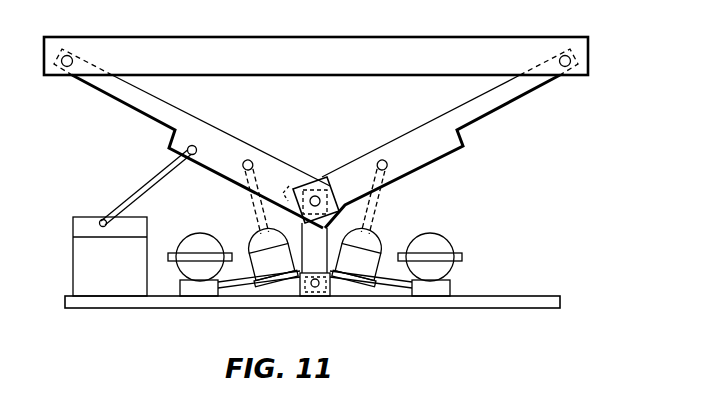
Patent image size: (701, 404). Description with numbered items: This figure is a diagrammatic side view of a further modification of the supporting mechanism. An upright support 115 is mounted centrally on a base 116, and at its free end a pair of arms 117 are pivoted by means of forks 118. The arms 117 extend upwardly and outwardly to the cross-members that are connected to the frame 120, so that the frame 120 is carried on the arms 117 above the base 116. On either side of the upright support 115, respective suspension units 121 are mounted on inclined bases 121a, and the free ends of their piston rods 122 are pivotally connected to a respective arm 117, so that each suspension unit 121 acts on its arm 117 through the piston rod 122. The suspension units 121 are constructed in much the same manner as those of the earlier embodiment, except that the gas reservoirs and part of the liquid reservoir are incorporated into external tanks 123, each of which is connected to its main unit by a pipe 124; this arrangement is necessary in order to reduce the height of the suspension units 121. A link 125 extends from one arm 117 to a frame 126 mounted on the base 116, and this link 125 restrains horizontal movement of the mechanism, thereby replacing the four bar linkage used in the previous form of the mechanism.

The frame 120 is at (350, 52).
The arms 117 is at (227, 145).
The forks 118 is at (305, 181).
The link 125 is at (160, 173).
The frame 126 is at (128, 287).
The base 116 is at (517, 305).
The external tanks 123 is at (198, 238).
The pipe 124 is at (232, 292).
The upright support 115 is at (315, 247).
The piston rods 122 is at (250, 205).
The suspension units 121 is at (276, 266).
The inclined bases 121a is at (272, 291).